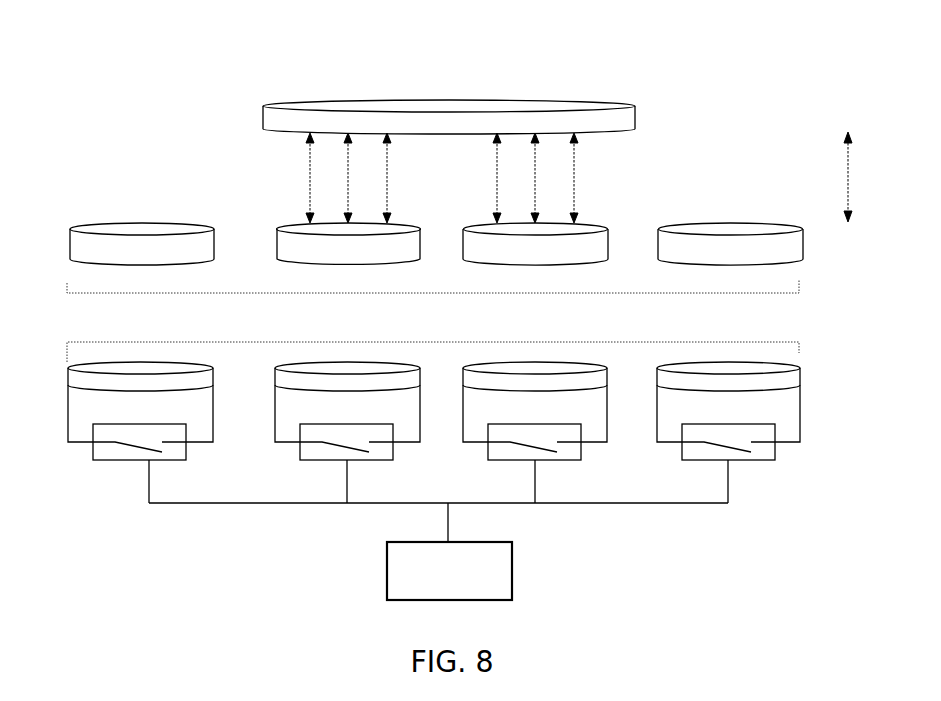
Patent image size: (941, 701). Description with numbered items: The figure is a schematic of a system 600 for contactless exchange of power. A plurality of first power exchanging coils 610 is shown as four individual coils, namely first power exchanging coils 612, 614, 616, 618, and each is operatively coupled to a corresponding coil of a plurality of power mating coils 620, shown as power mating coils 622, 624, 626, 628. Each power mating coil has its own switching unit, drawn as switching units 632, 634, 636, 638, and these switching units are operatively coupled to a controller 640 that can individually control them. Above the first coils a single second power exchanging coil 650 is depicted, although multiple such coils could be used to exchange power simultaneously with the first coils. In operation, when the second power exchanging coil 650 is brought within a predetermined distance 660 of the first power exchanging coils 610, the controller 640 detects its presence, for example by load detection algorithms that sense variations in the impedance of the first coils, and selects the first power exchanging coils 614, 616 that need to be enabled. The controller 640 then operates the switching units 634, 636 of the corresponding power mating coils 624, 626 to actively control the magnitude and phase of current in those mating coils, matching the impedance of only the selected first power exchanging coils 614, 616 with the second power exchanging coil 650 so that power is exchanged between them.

The system for contactless exchange of power 600 is at (821, 59).
The plurality of first power exchanging coils 610 is at (262, 293).
The first power exchanging coil 612 is at (70, 248).
The first power exchanging coil 614 is at (282, 226).
The first power exchanging coil 616 is at (470, 226).
The first power exchanging coil 618 is at (803, 243).
The plurality of power mating coils 620 is at (433, 342).
The power mating coil 622 is at (68, 378).
The power mating coil 624 is at (278, 374).
The power mating coil 626 is at (466, 374).
The power mating coil 628 is at (800, 375).
The switching unit 632 is at (120, 460).
The switching unit 634 is at (327, 460).
The switching unit 636 is at (515, 460).
The switching unit 638 is at (709, 460).
The controller 640 is at (512, 572).
The second power exchanging coil 650 is at (635, 115).
The predetermined distance 660 is at (850, 175).